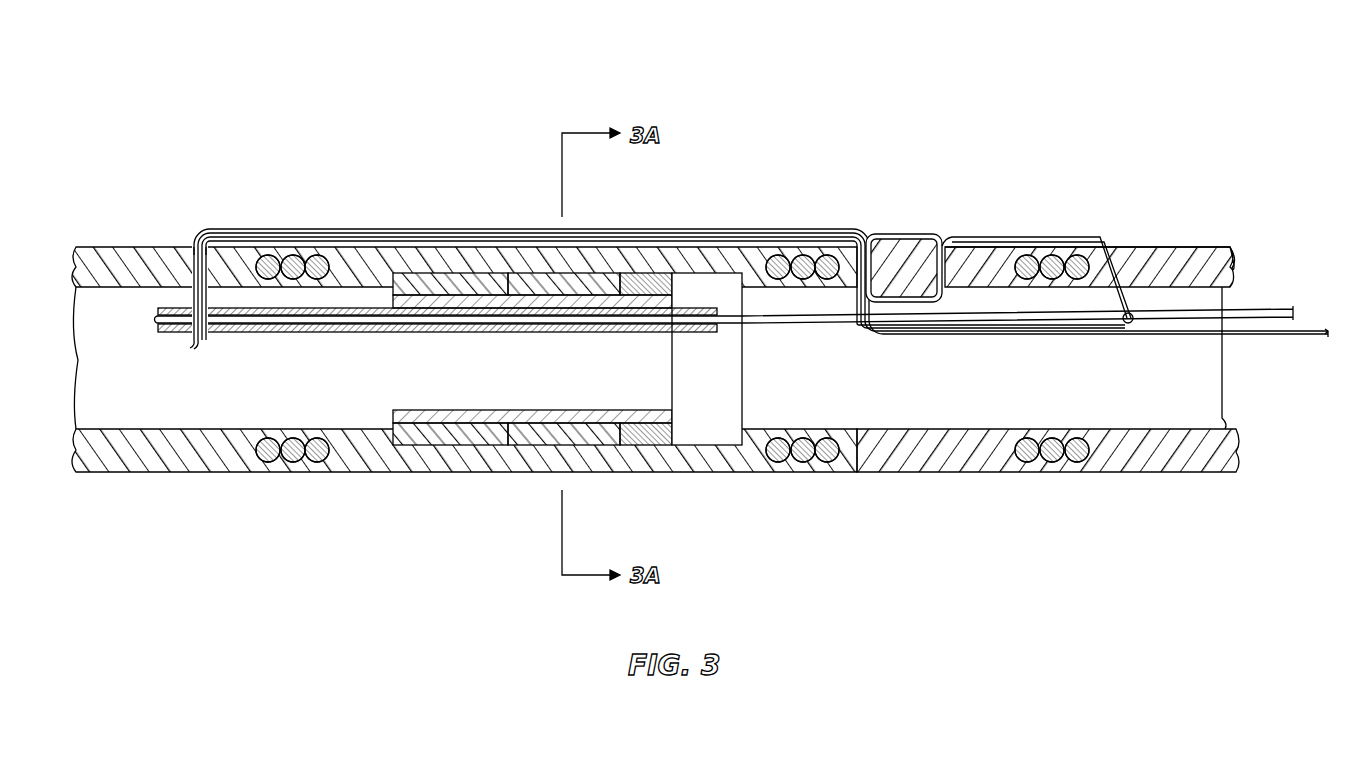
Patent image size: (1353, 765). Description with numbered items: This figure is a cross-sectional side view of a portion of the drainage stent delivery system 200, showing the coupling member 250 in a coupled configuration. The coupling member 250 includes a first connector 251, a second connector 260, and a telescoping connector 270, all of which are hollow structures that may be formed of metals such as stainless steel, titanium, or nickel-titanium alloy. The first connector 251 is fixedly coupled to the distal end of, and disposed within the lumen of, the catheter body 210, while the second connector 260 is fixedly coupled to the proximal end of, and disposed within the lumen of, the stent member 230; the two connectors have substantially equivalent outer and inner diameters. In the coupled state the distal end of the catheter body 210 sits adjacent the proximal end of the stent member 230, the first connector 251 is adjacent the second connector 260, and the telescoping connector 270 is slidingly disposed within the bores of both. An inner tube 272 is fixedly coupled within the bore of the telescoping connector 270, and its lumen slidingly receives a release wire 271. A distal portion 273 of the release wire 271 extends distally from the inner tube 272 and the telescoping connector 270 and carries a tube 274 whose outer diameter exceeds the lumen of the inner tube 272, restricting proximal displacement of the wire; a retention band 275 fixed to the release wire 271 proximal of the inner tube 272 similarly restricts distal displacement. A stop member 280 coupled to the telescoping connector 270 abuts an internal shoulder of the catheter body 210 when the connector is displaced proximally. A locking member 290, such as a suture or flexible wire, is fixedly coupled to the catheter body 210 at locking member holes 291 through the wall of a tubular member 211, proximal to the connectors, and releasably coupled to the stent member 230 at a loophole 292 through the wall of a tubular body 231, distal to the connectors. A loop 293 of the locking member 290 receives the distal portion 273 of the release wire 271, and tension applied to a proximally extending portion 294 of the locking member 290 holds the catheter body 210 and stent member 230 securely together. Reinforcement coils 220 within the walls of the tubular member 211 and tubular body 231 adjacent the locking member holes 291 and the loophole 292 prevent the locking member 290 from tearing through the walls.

The drainage stent delivery system 200 is at (1122, 152).
The catheter body 210 is at (1118, 473).
The tubular member 211 is at (920, 473).
The reinforcement coils 220 is at (317, 462).
The stent member 230 is at (190, 473).
The tubular body 231 is at (375, 473).
The coupling member 250 is at (741, 204).
The first connector 251 is at (578, 275).
The second connector 260 is at (478, 272).
The telescoping connector 270 is at (668, 440).
The release wire 271 is at (1263, 308).
The inner tube 272 is at (432, 333).
The distal portion 273 is at (352, 314).
The tube 274 is at (385, 321).
The retention band 275 is at (697, 335).
The stop member 280 is at (645, 280).
The locking member 290 is at (245, 236).
The locking member holes 291 is at (898, 248).
The loophole 292 is at (195, 245).
The loop 293 is at (198, 342).
The proximally extending portion 294 is at (1252, 336).